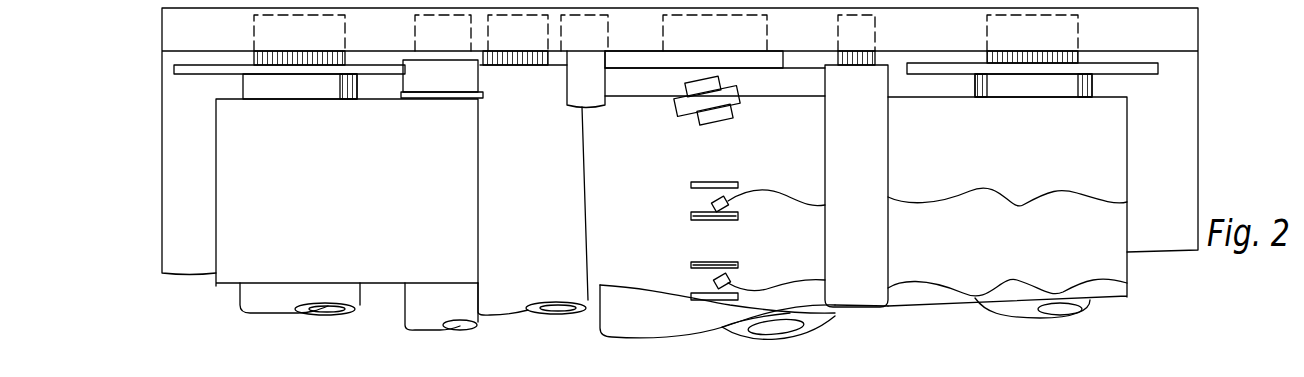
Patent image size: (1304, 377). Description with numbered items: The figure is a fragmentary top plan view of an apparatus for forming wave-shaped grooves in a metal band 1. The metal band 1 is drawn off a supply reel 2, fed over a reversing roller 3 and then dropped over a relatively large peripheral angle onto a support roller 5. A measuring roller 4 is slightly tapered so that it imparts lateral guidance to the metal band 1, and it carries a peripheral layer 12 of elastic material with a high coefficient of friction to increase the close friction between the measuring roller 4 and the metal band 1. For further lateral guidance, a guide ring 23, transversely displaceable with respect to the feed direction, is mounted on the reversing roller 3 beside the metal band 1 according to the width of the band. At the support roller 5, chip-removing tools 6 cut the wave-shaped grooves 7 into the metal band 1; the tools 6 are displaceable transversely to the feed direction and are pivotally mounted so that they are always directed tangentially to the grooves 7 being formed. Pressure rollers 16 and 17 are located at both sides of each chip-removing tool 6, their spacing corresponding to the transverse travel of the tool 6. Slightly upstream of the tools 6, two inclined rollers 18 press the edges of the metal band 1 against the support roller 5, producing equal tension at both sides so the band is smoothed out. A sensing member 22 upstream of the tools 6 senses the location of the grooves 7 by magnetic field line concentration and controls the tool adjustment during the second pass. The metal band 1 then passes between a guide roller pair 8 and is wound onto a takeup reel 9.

The metal band 1 is at (240, 205).
The supply reel 2 is at (214, 69).
The reversing roller 3 is at (413, 315).
The measuring roller 4 is at (497, 285).
The support roller 5 is at (635, 320).
The chip-removing tools 6 is at (728, 278).
The wave-shaped grooves 7 is at (933, 285).
The guide roller pair 8 is at (845, 287).
The takeup reel 9 is at (1093, 83).
The peripheral layer 12 is at (553, 317).
The pressure roller 16 is at (697, 260).
The pressure roller 17 is at (697, 293).
The inclined rollers 18 is at (680, 108).
The sensing member 22 is at (582, 90).
The guide ring 23 is at (424, 93).